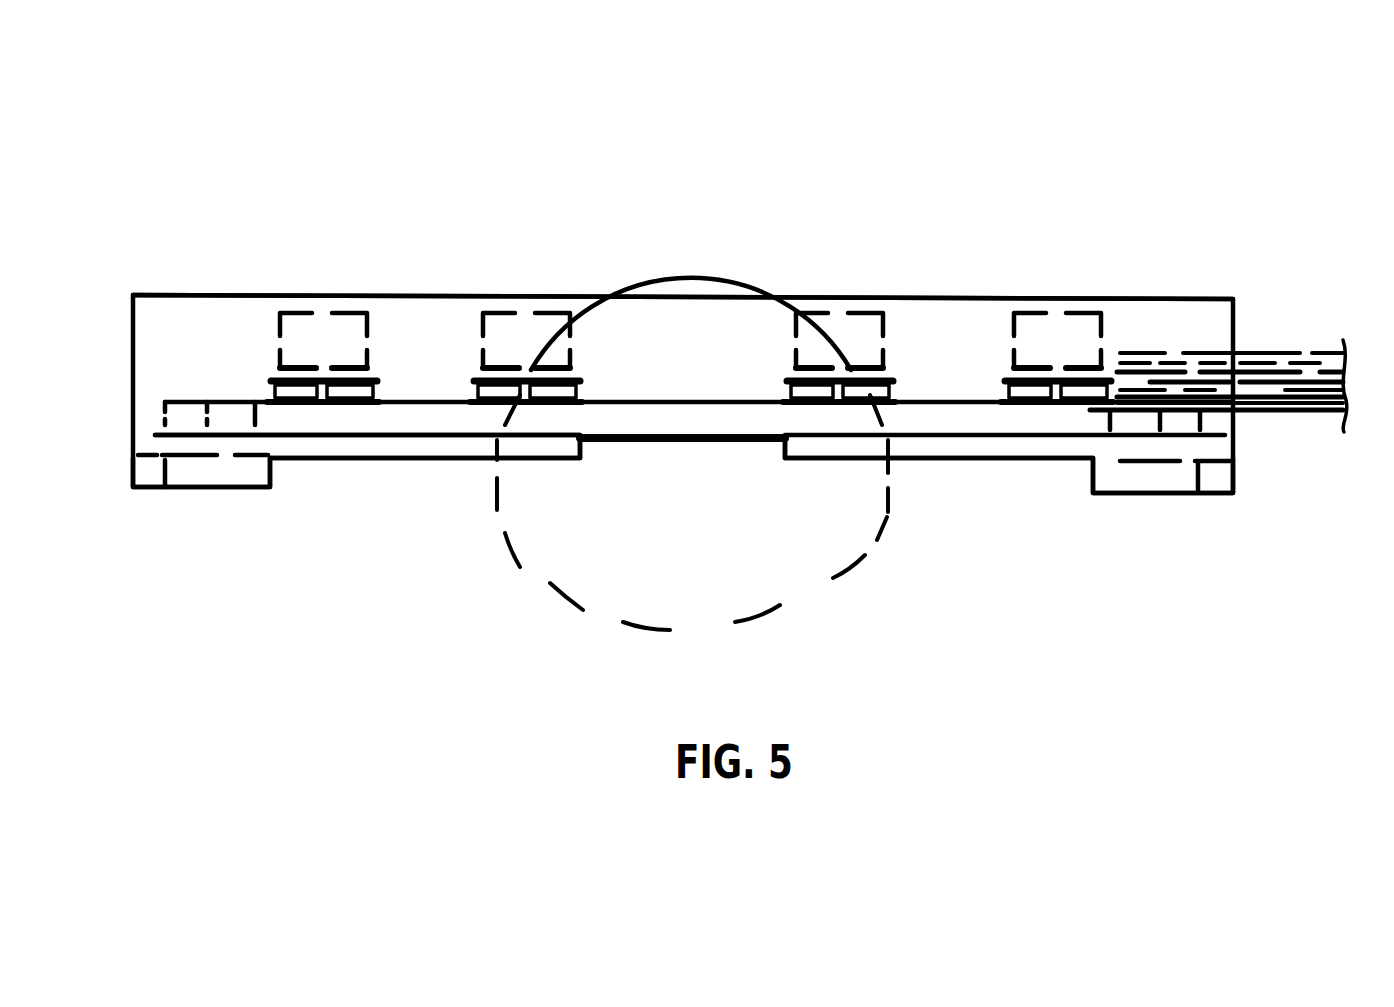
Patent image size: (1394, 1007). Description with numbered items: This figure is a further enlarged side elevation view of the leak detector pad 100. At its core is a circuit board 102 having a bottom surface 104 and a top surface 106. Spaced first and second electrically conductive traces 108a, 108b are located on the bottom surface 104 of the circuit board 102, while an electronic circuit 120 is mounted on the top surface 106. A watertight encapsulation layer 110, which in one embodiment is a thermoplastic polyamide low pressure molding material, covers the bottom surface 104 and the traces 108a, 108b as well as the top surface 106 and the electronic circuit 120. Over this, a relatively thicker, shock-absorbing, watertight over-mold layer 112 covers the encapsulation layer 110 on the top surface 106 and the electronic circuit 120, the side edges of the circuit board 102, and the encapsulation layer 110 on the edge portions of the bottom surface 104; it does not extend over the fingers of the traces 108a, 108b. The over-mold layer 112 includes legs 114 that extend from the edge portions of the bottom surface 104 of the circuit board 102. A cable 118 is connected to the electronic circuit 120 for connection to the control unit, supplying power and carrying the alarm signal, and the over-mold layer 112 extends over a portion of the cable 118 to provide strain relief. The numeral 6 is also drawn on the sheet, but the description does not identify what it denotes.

The leak detector pad 100 is at (1213, 166).
The over-mold layer 112 is at (916, 316).
The dome / membrane 6 is at (695, 282).
The encapsulation layer 110 is at (689, 458).
The electronic circuit 120 is at (377, 378).
The top surface 106 is at (450, 400).
The circuit board 102 is at (418, 470).
The bottom surface 104 is at (448, 440).
The first electrically conductive trace 108a is at (418, 470).
The second electrically conductive trace 108b is at (383, 430).
The legs 114 is at (200, 488).
The cable 118 is at (1300, 356).